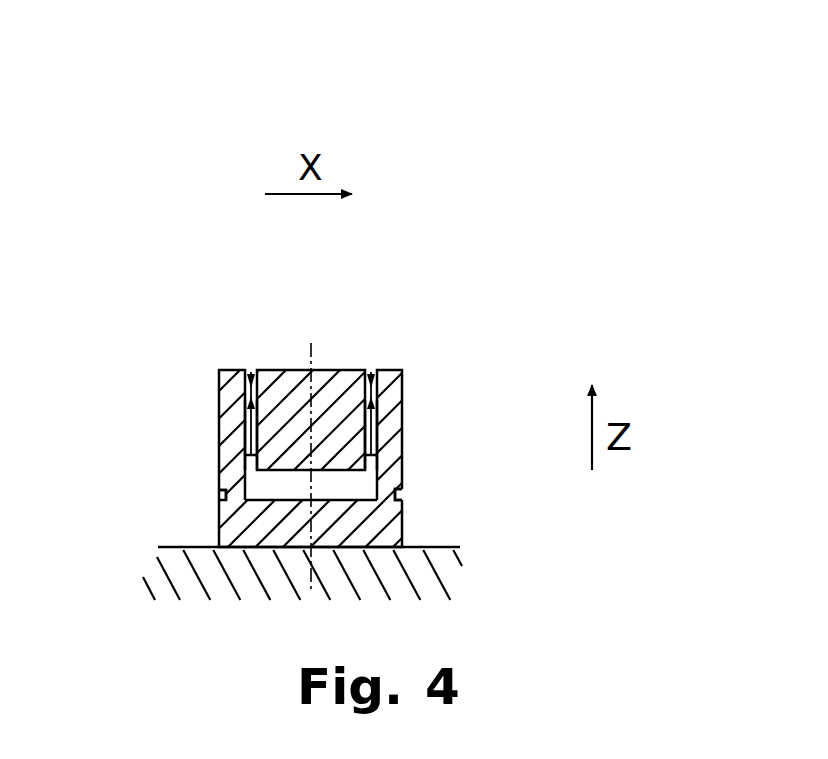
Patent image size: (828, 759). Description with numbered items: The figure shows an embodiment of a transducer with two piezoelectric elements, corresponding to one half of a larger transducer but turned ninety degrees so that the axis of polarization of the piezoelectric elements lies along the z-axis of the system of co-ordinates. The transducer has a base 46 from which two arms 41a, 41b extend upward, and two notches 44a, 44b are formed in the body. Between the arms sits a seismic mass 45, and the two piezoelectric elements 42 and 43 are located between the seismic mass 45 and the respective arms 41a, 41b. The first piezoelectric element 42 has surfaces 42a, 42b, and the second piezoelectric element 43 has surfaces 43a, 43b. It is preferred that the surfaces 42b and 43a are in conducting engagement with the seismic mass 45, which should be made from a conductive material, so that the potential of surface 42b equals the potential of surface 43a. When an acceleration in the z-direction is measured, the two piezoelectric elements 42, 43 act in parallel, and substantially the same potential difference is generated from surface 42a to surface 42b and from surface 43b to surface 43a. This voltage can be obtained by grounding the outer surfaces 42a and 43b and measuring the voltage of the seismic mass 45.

The arm 41a is at (233, 405).
The arm 41b is at (391, 396).
The piezoelectric element 42 is at (248, 372).
The piezoelectric element 43 is at (372, 372).
The surface 42a is at (241, 433).
The surface 42b is at (252, 455).
The surface 43a is at (377, 456).
The surface 43b is at (381, 423).
The notch 44a is at (216, 498).
The notch 44b is at (402, 498).
The seismic mass 45 is at (322, 385).
The base 46 is at (370, 535).